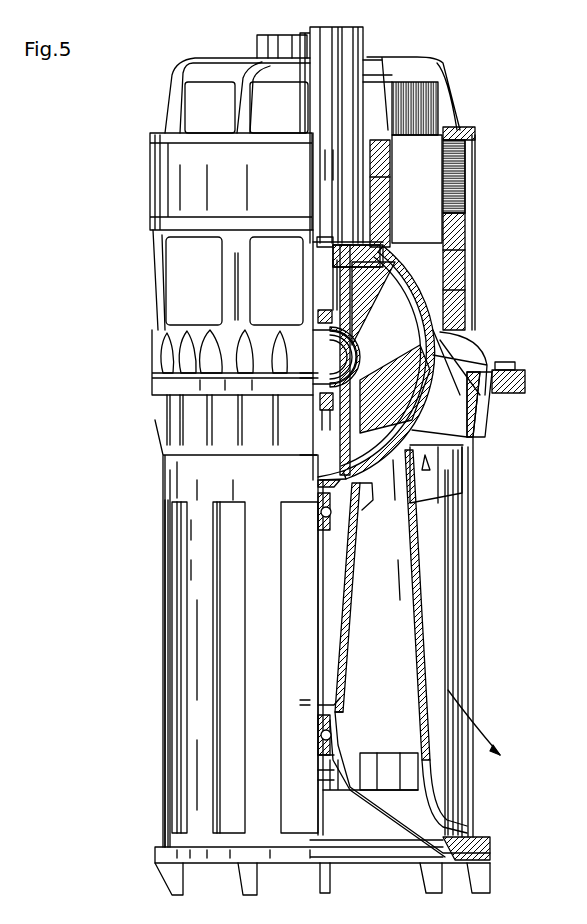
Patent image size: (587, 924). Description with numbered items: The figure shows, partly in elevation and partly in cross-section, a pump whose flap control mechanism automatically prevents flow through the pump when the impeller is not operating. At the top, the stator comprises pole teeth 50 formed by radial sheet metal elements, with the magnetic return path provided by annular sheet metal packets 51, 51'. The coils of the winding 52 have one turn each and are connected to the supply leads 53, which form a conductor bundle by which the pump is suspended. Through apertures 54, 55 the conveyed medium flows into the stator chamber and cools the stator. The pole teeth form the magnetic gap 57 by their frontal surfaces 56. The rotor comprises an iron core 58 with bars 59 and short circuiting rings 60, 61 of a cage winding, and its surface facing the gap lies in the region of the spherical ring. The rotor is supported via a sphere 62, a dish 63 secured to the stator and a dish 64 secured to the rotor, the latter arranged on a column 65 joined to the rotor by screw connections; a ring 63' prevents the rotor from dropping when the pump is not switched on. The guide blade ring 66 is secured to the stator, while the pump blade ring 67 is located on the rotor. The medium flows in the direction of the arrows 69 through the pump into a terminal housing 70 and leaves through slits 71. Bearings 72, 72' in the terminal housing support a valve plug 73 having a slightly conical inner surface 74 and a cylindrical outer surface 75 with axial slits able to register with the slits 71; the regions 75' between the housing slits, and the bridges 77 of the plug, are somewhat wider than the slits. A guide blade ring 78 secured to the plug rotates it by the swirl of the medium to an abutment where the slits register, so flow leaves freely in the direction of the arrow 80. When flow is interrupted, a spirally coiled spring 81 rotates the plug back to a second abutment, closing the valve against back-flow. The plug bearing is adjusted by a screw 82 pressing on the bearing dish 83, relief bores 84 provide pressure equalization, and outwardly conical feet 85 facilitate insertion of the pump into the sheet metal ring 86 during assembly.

The pole teeth 50 is at (419, 201).
The annular sheet metal packet 51 is at (431, 96).
The annular sheet metal packet 51' is at (480, 224).
The winding 52 is at (447, 240).
The supply leads 53 is at (337, 175).
The aperture 54 is at (190, 112).
The aperture 55 is at (180, 268).
The frontal surfaces 56 is at (433, 323).
The magnetic gap 57 is at (445, 312).
The iron core 58 is at (408, 349).
The bars 59 is at (400, 300).
The short circuiting ring 60 is at (470, 395).
The short circuiting ring 61 is at (355, 268).
The sphere 62 is at (322, 388).
The dish 63 is at (323, 355).
The ring 63' is at (369, 357).
The dish 64 is at (318, 378).
The column 65 is at (317, 452).
The guide blade ring 66 is at (165, 356).
The pump blade ring 67 is at (475, 410).
The arrows 69 is at (468, 470).
The terminal housing 70 is at (176, 540).
The slits 71 is at (225, 597).
The bearing 72 is at (309, 515).
The bearing 72' is at (296, 739).
The plug 73 is at (348, 668).
The conical inner surface 74 is at (417, 620).
The cylindrical outer surface 75 is at (449, 652).
The regions between the slits 75' is at (193, 705).
The bridges 77 is at (178, 672).
The guide blade ring 78 is at (462, 487).
The arrow 80 is at (483, 748).
The spirally coiled spring 81 is at (385, 780).
The screw 82 is at (322, 790).
The bearing dish 83 is at (320, 487).
The relief bores 84 is at (362, 510).
The feet 85 is at (493, 875).
The sheet metal ring 86 is at (527, 385).